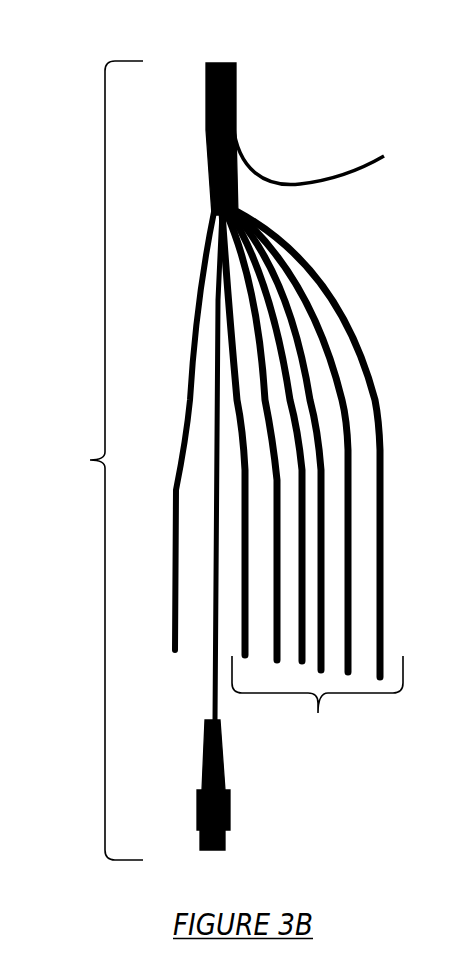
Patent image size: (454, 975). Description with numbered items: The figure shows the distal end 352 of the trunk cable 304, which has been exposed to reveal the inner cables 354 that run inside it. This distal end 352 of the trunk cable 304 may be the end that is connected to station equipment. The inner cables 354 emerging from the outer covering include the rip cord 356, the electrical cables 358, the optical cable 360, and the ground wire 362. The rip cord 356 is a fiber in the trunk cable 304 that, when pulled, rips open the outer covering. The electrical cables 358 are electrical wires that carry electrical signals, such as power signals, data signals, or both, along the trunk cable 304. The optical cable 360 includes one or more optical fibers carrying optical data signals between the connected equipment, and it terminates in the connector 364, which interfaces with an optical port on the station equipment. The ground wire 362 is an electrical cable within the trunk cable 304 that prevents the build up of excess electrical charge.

The trunk cable 304 is at (237, 92).
The distal end 352 is at (98, 460).
The inner cables 354 is at (361, 773).
The rip cord 356 is at (355, 182).
The electrical cables 358 is at (312, 477).
The optical cable 360 is at (210, 655).
The ground wire 362 is at (193, 356).
The connector 364 is at (230, 807).